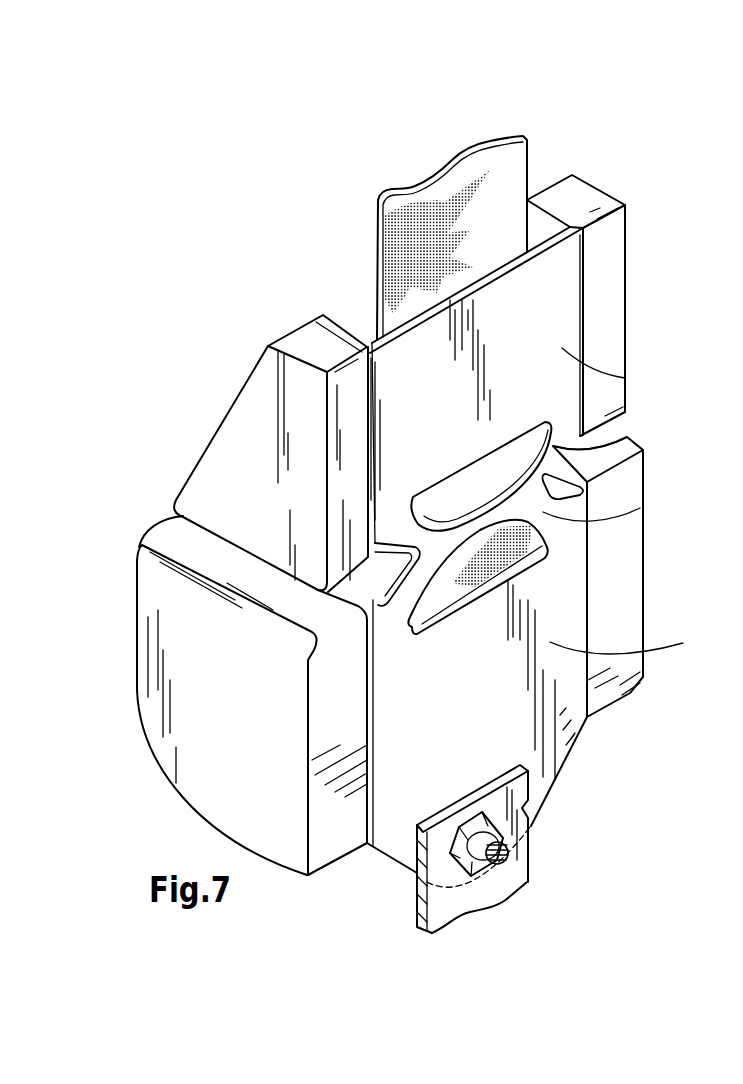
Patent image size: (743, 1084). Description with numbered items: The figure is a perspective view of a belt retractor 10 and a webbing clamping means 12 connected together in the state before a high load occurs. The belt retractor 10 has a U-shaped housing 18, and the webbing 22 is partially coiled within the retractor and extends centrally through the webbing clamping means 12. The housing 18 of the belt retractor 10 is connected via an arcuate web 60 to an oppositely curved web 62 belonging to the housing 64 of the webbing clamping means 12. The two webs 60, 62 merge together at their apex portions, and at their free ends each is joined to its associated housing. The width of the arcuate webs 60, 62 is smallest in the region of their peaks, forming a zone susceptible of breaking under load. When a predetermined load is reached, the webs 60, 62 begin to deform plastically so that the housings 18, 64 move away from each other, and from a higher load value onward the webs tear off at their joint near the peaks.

The belt retractor 10 is at (222, 828).
The webbing clamping means 12 is at (255, 372).
The housing 18 is at (608, 638).
The webbing 22 is at (515, 163).
The arcuate web 60 is at (640, 508).
The oppositely curved web 62 is at (628, 437).
The housing 64 is at (625, 378).